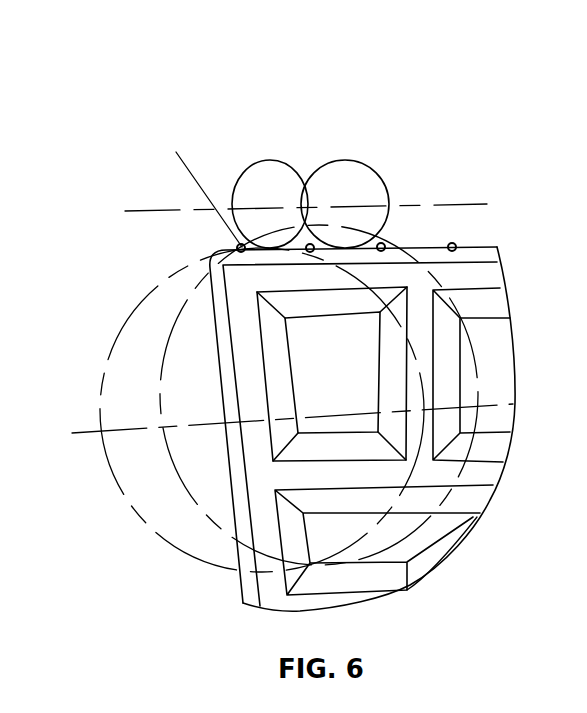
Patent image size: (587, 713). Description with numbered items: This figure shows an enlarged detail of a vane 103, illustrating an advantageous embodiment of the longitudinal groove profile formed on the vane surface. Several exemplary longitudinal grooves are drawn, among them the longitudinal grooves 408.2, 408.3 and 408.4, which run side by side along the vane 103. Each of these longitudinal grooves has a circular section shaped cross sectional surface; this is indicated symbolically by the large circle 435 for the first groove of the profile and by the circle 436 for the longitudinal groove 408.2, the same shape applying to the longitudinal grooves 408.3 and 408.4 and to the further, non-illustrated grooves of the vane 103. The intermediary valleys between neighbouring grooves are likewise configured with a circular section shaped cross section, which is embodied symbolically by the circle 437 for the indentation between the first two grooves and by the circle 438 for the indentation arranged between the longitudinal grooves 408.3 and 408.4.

The vane 103 is at (175, 90).
The longitudinal groove 408.2 is at (310, 246).
The longitudinal groove 408.3 is at (382, 245).
The longitudinal groove 408.4 is at (453, 245).
The circle 435 is at (103, 373).
The circle 436 is at (168, 453).
The circle 437 is at (269, 161).
The circle 438 is at (345, 161).